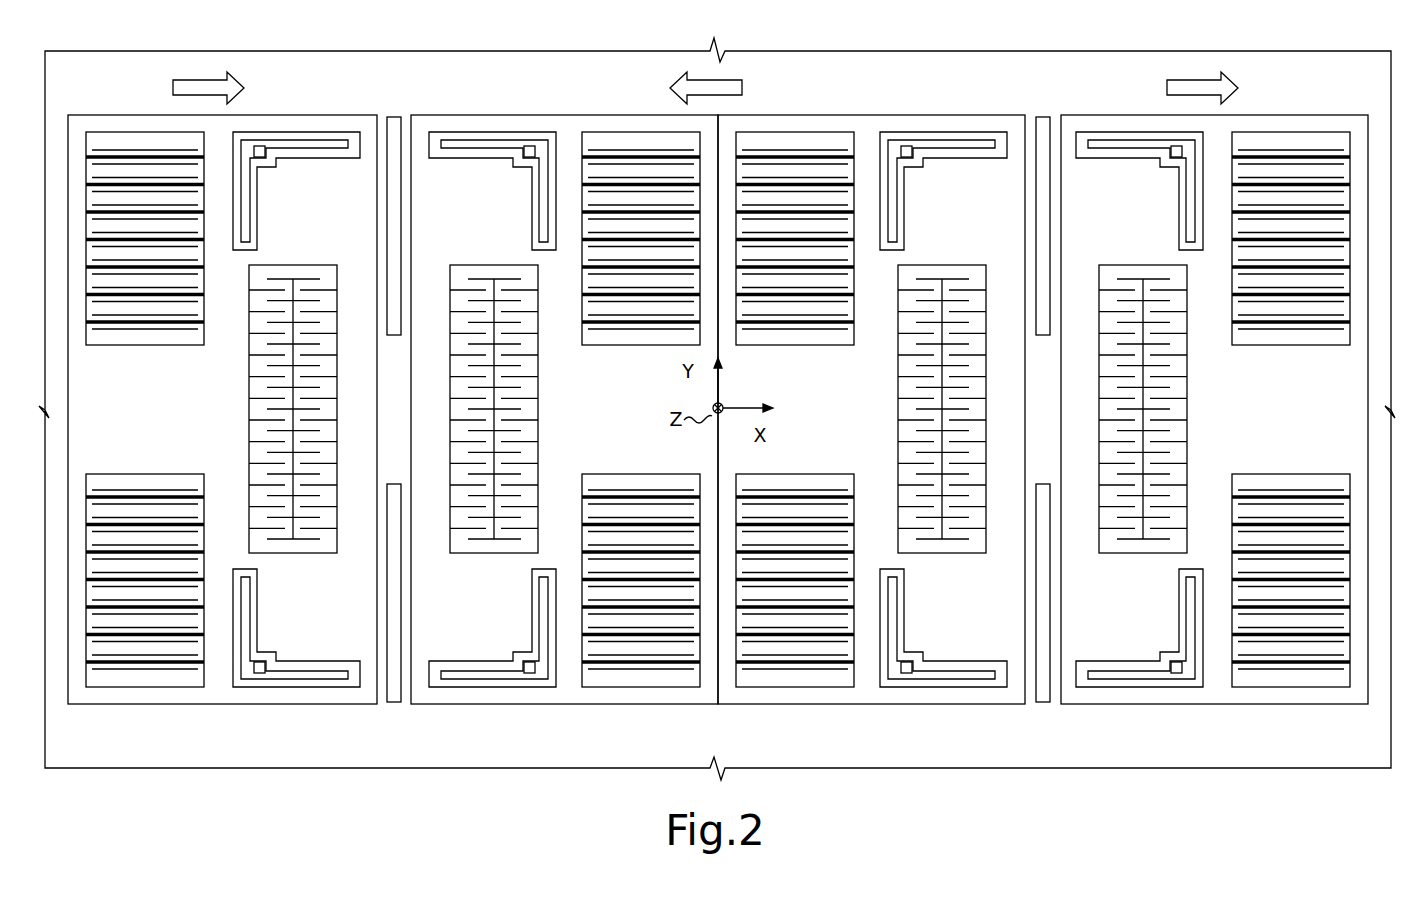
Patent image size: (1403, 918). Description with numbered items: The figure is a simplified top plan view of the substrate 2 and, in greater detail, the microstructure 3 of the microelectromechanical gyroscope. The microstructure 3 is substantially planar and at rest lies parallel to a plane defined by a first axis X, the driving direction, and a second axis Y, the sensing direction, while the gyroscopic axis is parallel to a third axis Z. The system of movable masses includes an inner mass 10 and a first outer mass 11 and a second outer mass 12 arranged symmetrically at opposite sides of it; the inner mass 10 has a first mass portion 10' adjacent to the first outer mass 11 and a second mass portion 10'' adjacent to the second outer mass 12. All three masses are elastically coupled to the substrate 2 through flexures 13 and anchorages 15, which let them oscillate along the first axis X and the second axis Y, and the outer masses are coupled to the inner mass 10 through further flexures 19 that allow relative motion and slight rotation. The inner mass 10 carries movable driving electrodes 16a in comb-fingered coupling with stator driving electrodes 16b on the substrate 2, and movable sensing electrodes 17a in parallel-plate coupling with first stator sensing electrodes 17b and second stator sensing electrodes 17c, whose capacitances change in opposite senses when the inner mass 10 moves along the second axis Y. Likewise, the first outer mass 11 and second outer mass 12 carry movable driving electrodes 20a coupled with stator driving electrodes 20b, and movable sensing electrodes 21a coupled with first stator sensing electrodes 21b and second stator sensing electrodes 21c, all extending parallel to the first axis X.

The substrate 2 is at (893, 51).
The microstructure 3 is at (222, 735).
The inner mass 10 is at (718, 417).
The first mass portion 10' is at (564, 362).
The second mass portion 10'' is at (871, 362).
The first outer mass 11 is at (262, 683).
The second outer mass 12 is at (1175, 693).
The flexures 13 is at (314, 146).
The anchorages 15 is at (268, 158).
The movable driving electrodes 16a is at (525, 377).
The stator driving electrodes 16b is at (497, 301).
The movable sensing electrodes 17a is at (590, 338).
The first stator sensing electrode 17b is at (612, 178).
The second stator sensing electrode 17c is at (640, 295).
The flexures 19 is at (394, 135).
The movable driving electrodes 20a is at (262, 377).
The stator driving electrodes 20b is at (297, 301).
The movable sensing electrodes 21a is at (152, 322).
The first stator sensing electrode 21b is at (104, 344).
The second stator sensing electrode 21c is at (120, 178).